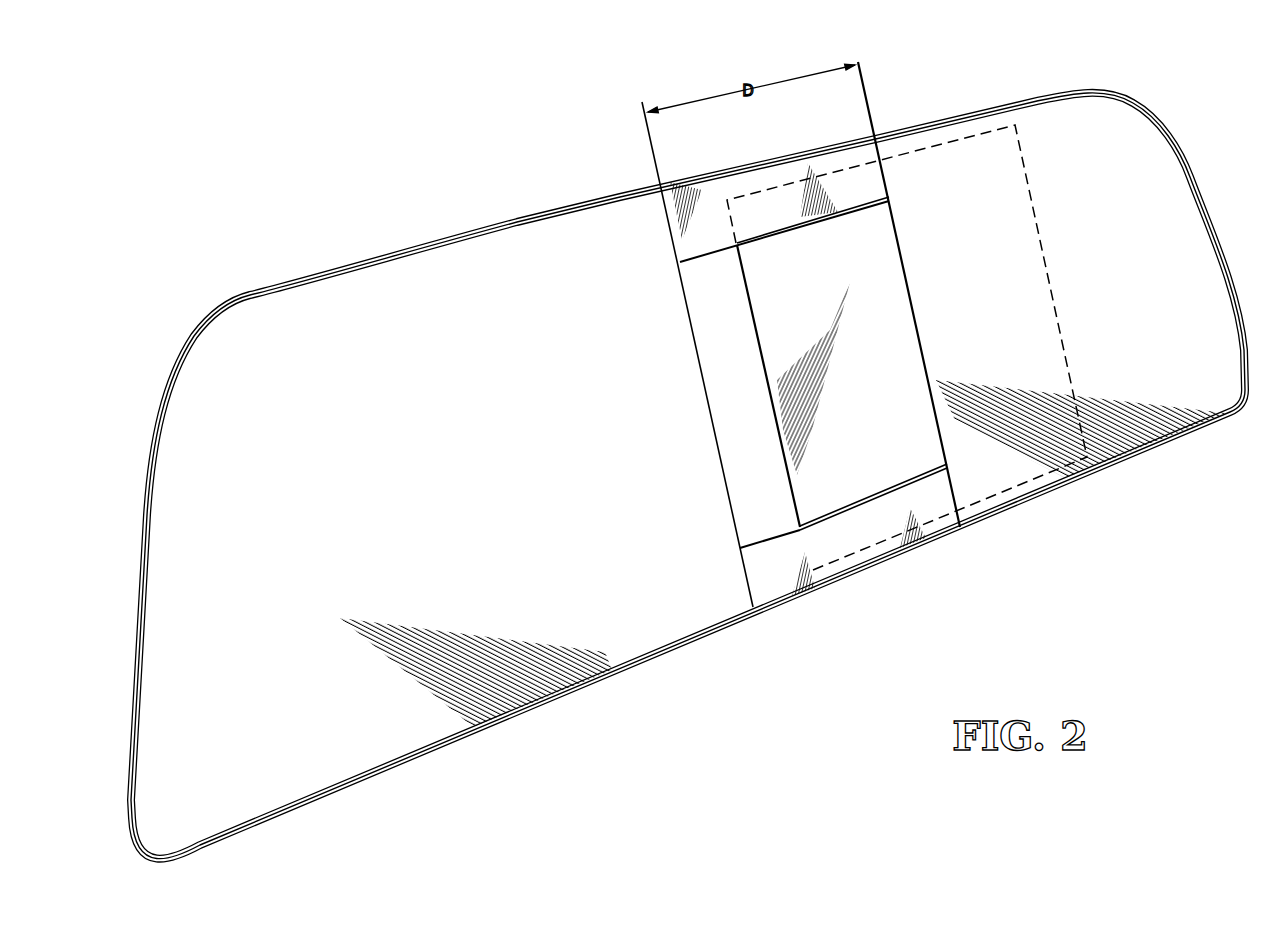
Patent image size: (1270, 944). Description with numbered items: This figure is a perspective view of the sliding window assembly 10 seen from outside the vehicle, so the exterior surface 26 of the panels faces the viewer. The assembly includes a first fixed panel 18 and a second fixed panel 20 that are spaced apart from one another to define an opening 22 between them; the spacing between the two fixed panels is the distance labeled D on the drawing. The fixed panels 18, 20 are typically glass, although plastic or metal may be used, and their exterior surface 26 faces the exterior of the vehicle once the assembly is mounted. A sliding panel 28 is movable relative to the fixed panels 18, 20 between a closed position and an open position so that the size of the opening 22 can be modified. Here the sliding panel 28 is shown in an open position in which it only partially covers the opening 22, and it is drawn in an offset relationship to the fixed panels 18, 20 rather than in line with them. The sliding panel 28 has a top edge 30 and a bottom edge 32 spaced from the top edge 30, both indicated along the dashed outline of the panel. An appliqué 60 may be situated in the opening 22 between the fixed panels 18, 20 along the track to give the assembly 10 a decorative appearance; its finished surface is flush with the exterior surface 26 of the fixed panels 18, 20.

The sliding window assembly 10 is at (500, 126).
The first fixed panel 18 is at (300, 328).
The second fixed panel 20 is at (1125, 130).
The opening 22 is at (737, 523).
The exterior surface 26 is at (489, 445).
The sliding panel 28 is at (888, 462).
The top edge 30 is at (923, 147).
The bottom edge 32 is at (1023, 498).
The appliqué 60 is at (713, 190).